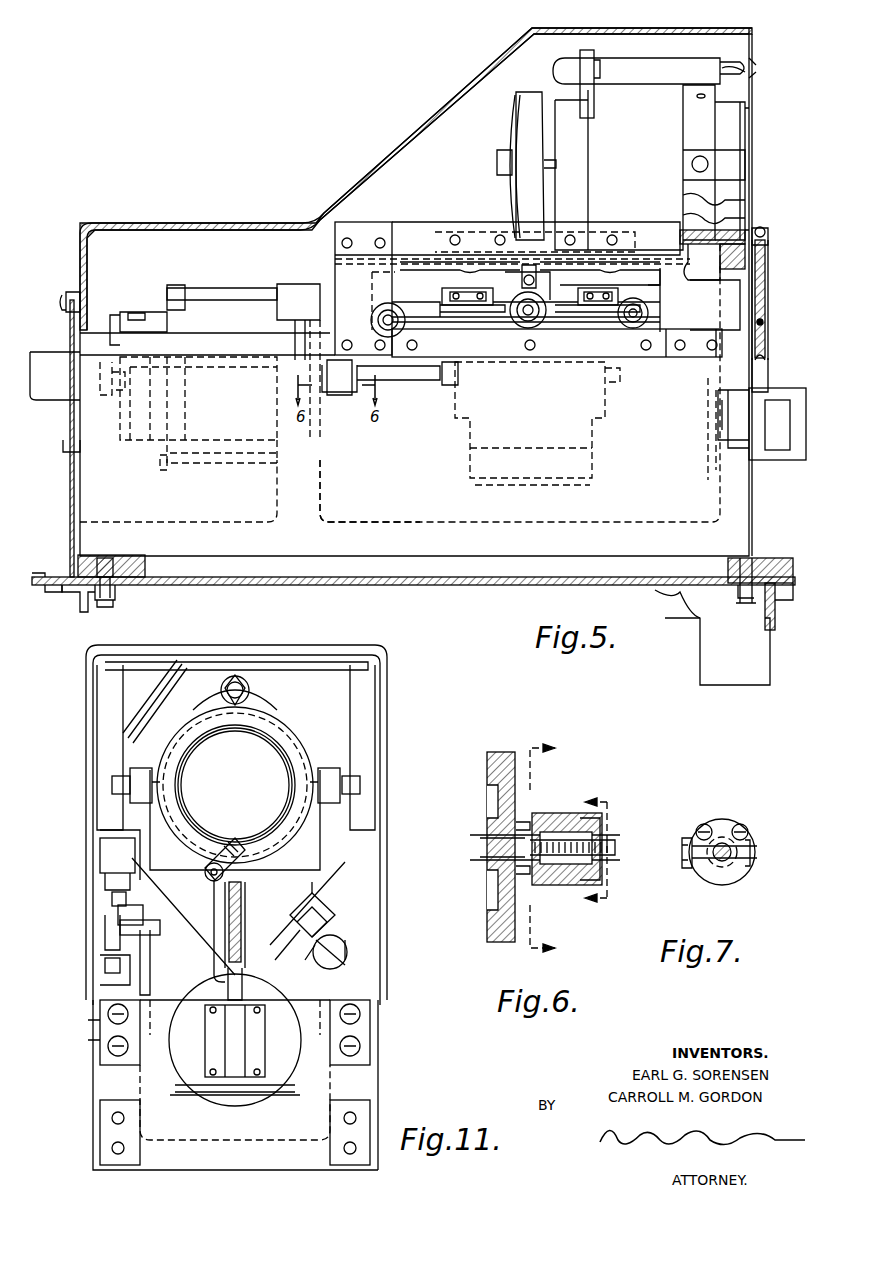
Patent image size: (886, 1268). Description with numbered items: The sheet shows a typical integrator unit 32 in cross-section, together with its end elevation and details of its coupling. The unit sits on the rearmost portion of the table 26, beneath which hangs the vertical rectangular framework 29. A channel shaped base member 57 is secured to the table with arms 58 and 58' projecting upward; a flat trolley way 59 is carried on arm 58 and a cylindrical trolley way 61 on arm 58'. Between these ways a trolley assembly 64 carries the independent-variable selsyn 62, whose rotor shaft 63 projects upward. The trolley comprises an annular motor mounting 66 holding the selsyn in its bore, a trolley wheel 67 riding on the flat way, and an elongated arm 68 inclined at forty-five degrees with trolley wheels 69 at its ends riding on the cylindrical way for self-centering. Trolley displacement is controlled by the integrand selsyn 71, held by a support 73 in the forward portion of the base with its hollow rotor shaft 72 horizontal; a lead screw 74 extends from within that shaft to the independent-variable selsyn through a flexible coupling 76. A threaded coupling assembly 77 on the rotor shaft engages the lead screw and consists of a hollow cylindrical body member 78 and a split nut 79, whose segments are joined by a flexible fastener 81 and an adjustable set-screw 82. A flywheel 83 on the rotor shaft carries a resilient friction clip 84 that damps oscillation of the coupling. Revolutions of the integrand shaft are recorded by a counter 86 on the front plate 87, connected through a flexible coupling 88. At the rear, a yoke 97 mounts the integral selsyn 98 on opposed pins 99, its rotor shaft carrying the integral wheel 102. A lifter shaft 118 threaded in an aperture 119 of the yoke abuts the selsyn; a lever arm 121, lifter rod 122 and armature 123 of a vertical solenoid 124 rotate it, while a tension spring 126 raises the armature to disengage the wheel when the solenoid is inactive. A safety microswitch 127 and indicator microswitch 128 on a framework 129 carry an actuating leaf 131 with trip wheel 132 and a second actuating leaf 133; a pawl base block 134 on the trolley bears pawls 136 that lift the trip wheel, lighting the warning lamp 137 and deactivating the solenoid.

In FIG. 5, the table 26 is at (372, 588).
In FIG. 5, the vertical rectangular framework 29 is at (716, 662).
In FIG. 5, the integrator unit 32 is at (230, 188).
In FIG. 5, the base member 57 is at (540, 544).
In FIG. 11, the base member 57 is at (235, 1140).
In FIG. 5, the arm 58 is at (400, 381).
In FIG. 11, the arm 58 is at (372, 1085).
In FIG. 5, the arm 58' is at (120, 310).
In FIG. 11, the arm 58' is at (214, 1085).
In FIG. 5, the flat trolley way 59 is at (630, 348).
In FIG. 11, the flat trolley way 59 is at (105, 957).
In FIG. 5, the cylindrical trolley way 61 is at (320, 290).
In FIG. 11, the cylindrical trolley way 61 is at (345, 955).
In FIG. 5, the independent-variable selsyn 62 is at (595, 442).
In FIG. 11, the independent-variable selsyn 62 is at (288, 1085).
In FIG. 5, the rotor shaft 63 is at (518, 262).
In FIG. 5, the trolley assembly 64 is at (660, 306).
In FIG. 5, the annular motor mounting 66 is at (500, 318).
In FIG. 11, the annular motor mounting 66 is at (148, 940).
In FIG. 5, the trolley wheel 67 is at (545, 318).
In FIG. 11, the trolley wheel 67 is at (105, 932).
In FIG. 5, the elongated arm 68 is at (392, 300).
In FIG. 11, the elongated arm 68 is at (335, 915).
In FIG. 5, the trolley wheel 69 is at (405, 318).
In FIG. 11, the trolley wheel 69 is at (288, 935).
In FIG. 5, the integrand selsyn 71 is at (140, 320).
In FIG. 5, the rotor shaft 72 is at (252, 383).
In FIG. 6, the rotor shaft 72 is at (485, 835).
In FIG. 5, the support 73 is at (320, 485).
In FIG. 5, the lead screw 74 is at (425, 380).
In FIG. 6, the lead screw 74 is at (618, 848).
In FIG. 7, the lead screw 74 is at (718, 865).
In FIG. 5, the flexible coupling 76 is at (450, 390).
In FIG. 5, the threaded coupling assembly 77 is at (335, 400).
In FIG. 6, the threaded coupling assembly 77 is at (588, 912).
In FIG. 6, the hollow cylindrical body member 78 is at (545, 885).
In FIG. 6, the split nut 79 is at (602, 870).
In FIG. 7, the split nut 79 is at (730, 822).
In FIG. 7, the flexible fastener 81 is at (690, 838).
In FIG. 7, the adjustable set-screw 82 is at (752, 856).
In FIG. 6, the flywheel 83 is at (503, 752).
In FIG. 6, the resilient friction clip 84 is at (522, 822).
In FIG. 5, the counter 86 is at (63, 395).
In FIG. 5, the front plate 87 is at (66, 325).
In FIG. 5, the flexible coupling 88 is at (112, 395).
In FIG. 5, the yoke 97 is at (742, 290).
In FIG. 11, the yoke 97 is at (308, 895).
In FIG. 5, the integral selsyn 98 is at (640, 136).
In FIG. 11, the integral selsyn 98 is at (283, 740).
In FIG. 5, the pins 99 is at (692, 164).
In FIG. 11, the pins 99 is at (112, 785).
In FIG. 5, the integral wheel 102 is at (505, 138).
In FIG. 5, the lifter shaft 118 is at (760, 235).
In FIG. 11, the lifter shaft 118 is at (218, 858).
In FIG. 5, the aperture 119 is at (722, 258).
In FIG. 5, the lever arm 121 is at (768, 236).
In FIG. 11, the lever arm 121 is at (206, 880).
In FIG. 5, the lifter rod 122 is at (765, 320).
In FIG. 11, the lifter rod 122 is at (214, 955).
In FIG. 5, the armature 123 is at (768, 372).
In FIG. 11, the armature 123 is at (245, 975).
In FIG. 5, the solenoid 124 is at (798, 455).
In FIG. 11, the solenoid 124 is at (205, 1052).
In FIG. 5, the tension spring 126 is at (768, 300).
In FIG. 11, the tension spring 126 is at (242, 915).
In FIG. 5, the safety microswitch 127 is at (433, 242).
In FIG. 5, the indicator microswitch 128 is at (630, 240).
In FIG. 11, the indicator microswitch 128 is at (105, 880).
In FIG. 5, the framework 129 is at (372, 222).
In FIG. 11, the framework 129 is at (100, 845).
In FIG. 5, the actuating leaf 131 is at (615, 273).
In FIG. 5, the trip wheel 132 is at (548, 308).
In FIG. 11, the trip wheel 132 is at (112, 895).
In FIG. 5, the second actuating leaf 133 is at (445, 268).
In FIG. 5, the pawl base block 134 is at (492, 307).
In FIG. 5, the pawl 136 is at (450, 290).
In FIG. 11, the pawl 136 is at (118, 912).
In FIG. 5, the warning lamp 137 is at (580, 62).